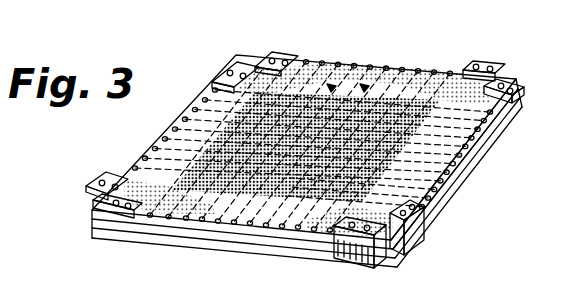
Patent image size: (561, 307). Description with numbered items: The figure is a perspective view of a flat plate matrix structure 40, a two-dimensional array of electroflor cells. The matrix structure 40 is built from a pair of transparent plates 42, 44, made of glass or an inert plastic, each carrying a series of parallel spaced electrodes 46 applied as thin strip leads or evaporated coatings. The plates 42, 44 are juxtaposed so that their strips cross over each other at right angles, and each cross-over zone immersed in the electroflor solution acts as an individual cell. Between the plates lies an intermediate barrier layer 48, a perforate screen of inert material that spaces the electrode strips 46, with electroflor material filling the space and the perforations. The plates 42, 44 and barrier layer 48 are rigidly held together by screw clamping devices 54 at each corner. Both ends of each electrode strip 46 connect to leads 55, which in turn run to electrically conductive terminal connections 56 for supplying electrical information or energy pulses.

The flat plate matrix structure 40 is at (345, 61).
The transparent plate 42 is at (322, 254).
The transparent plate 44 is at (282, 243).
The electrodes 46 is at (204, 85).
The intermediate barrier layer 48 is at (437, 101).
The screw clamping devices 54 is at (486, 64).
The leads 55 is at (130, 157).
The terminal connections 56 is at (372, 69).